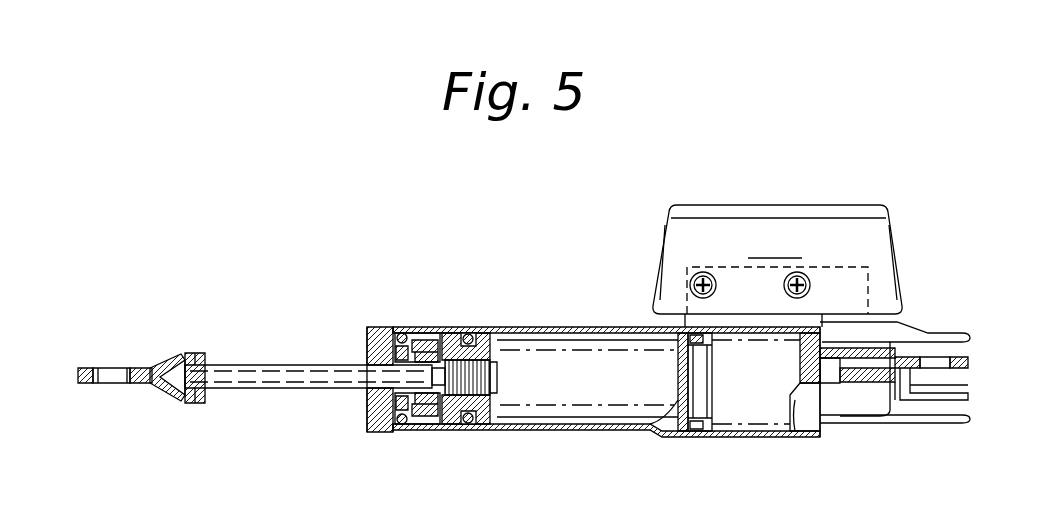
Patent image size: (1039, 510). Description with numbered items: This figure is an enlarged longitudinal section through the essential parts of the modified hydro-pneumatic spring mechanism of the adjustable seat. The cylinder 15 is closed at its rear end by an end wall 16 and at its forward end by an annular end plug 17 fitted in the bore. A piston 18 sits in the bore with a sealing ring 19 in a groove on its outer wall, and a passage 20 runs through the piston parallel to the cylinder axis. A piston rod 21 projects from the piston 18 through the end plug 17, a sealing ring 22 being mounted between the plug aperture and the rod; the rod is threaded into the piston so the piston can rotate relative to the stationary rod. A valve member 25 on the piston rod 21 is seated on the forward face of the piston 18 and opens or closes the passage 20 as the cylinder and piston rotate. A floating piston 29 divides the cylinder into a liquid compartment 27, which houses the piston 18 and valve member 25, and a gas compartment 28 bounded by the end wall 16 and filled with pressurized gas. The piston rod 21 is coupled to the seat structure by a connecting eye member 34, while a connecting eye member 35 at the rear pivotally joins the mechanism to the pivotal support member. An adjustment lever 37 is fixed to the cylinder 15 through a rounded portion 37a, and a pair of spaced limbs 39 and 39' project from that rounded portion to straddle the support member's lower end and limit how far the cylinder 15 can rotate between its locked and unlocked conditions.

The cylinder 15 is at (610, 327).
The end wall 16 is at (800, 378).
The annular end plug 17 is at (370, 412).
The piston 18 is at (454, 333).
The sealing ring 19 is at (472, 424).
The passage 20 is at (492, 348).
The piston rod 21 is at (291, 365).
The sealing ring 22 is at (415, 430).
The valve member 25 is at (426, 340).
The liquid compartment 27 is at (575, 412).
The gas compartment 28 is at (740, 418).
The floating piston 29 is at (672, 400).
The connecting eye member 34 is at (138, 368).
The connecting eye member 35 is at (975, 358).
The adjustment lever 37 is at (804, 208).
The rounded portion 37a is at (775, 245).
The coupling limb 39 is at (907, 351).
The coupling limb 39' is at (920, 440).